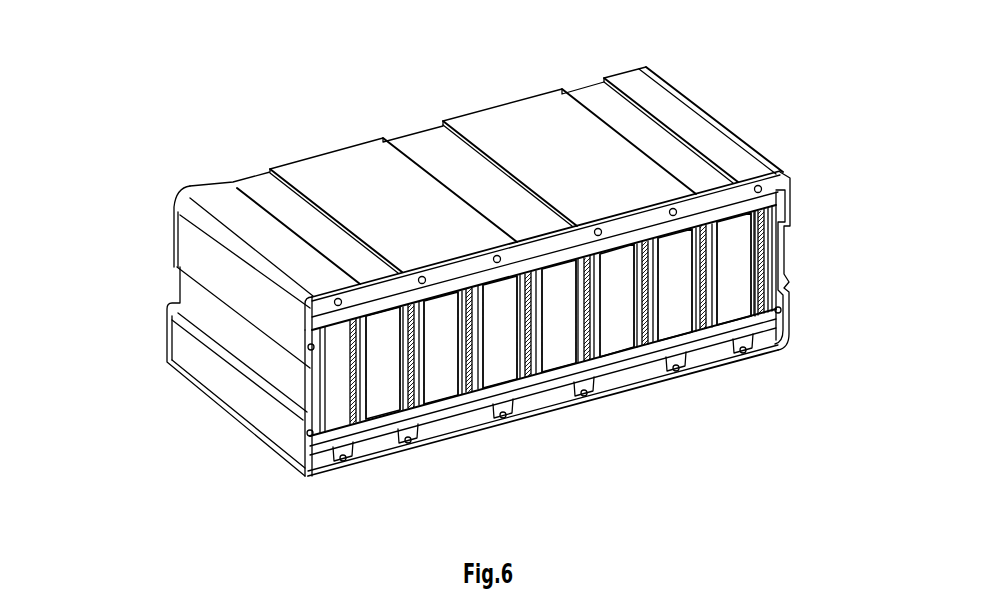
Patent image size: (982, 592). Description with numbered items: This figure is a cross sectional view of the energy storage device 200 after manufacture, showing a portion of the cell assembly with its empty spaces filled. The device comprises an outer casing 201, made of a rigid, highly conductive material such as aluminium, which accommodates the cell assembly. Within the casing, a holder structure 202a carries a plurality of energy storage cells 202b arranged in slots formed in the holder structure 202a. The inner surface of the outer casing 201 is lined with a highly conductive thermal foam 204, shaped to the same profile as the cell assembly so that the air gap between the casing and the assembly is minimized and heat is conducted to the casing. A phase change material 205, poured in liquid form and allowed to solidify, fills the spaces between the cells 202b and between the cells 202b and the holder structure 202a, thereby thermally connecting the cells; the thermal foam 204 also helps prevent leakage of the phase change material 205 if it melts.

The energy storage device 200 is at (96, 90).
The outer casing 201 is at (703, 126).
The holder structure 202a is at (446, 430).
The energy storage cells 202b is at (676, 333).
The thermal foam 204 is at (774, 202).
The phase change material 205 is at (307, 317).